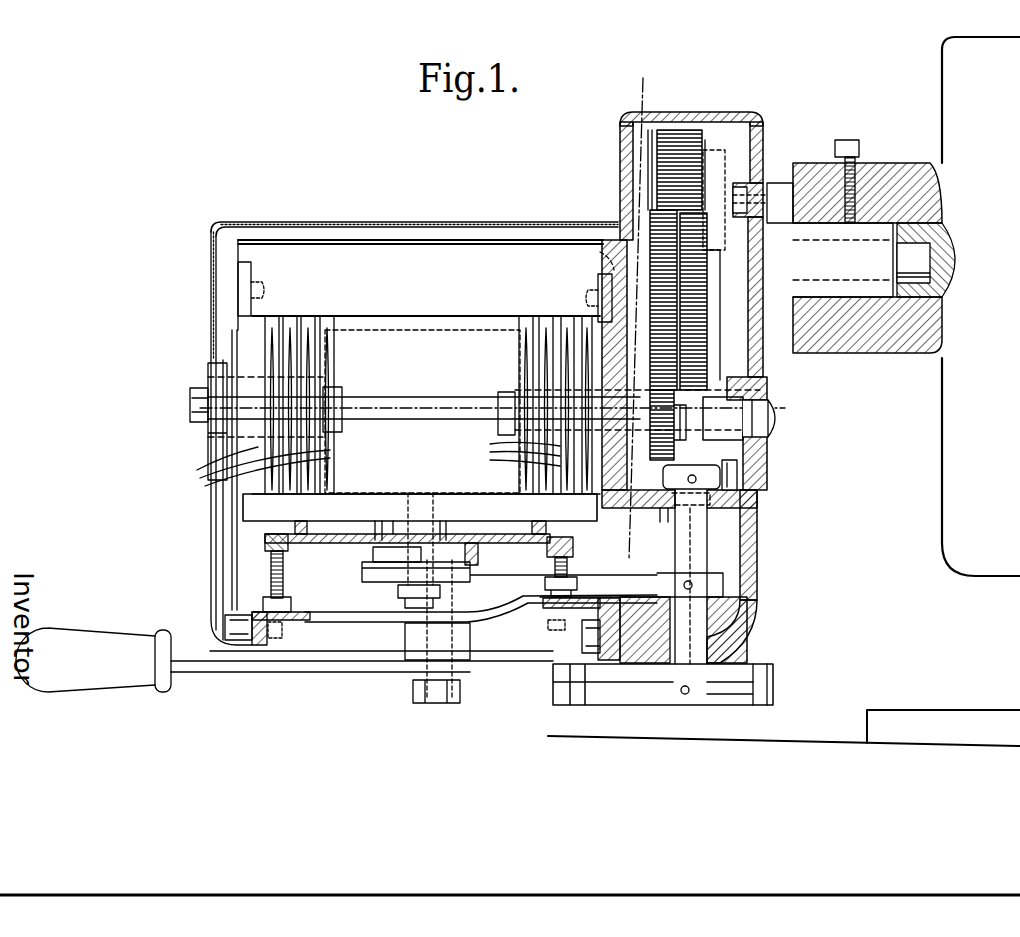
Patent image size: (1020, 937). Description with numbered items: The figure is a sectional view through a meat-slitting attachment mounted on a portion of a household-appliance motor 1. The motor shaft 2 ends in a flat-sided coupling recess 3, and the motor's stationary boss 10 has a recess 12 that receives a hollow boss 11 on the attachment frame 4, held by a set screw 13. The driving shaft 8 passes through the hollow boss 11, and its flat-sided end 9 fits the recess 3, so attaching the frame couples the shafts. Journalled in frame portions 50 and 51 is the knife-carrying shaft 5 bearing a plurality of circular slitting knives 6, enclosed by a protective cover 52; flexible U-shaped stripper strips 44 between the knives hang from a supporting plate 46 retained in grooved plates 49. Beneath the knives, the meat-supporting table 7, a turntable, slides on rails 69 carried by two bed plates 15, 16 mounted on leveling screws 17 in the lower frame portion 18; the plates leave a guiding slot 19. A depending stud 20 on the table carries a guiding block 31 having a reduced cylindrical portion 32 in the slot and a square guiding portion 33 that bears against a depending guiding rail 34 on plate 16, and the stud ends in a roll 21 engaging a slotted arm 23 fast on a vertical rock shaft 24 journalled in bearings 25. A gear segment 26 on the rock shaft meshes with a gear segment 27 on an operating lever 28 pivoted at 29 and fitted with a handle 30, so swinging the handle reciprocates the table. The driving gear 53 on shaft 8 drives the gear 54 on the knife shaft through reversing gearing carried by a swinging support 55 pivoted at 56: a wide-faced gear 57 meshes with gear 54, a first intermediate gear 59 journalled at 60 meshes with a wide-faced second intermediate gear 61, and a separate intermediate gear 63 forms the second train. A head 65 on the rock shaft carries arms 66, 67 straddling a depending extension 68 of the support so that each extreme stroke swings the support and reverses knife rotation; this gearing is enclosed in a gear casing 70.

The motor 1 is at (968, 82).
The motor shaft 2 is at (926, 300).
The coupling recess 3 is at (875, 372).
The frame 4 is at (758, 522).
The knife-carrying shaft 5 is at (425, 408).
The circular slitting knives 6 is at (540, 366).
The meat-supporting table 7 is at (258, 508).
The driving shaft 8 is at (787, 250).
The flat-sided end 9 is at (915, 242).
The stationary hub element or boss 10 is at (845, 352).
The hollow boss 11 is at (882, 232).
The recess 12 is at (825, 180).
The set screw 13 is at (850, 140).
The plate 15 is at (340, 542).
The plate 16 is at (515, 544).
The leveling screws 17 is at (271, 568).
The lower portion of the frame 18 is at (302, 622).
The guiding slot 19 is at (394, 522).
The depending stud 20 is at (424, 520).
The roll 21 is at (442, 587).
The arm 23 is at (517, 580).
The vertical rock shaft 24 is at (703, 553).
The bearings 25 is at (752, 492).
The gear segment 26 is at (776, 688).
The gear segment 27 is at (553, 690).
The operating lever 28 is at (334, 673).
The pivot 29 is at (418, 660).
The handle 30 is at (82, 640).
The guiding block 31 is at (388, 528).
The cylindrical portion 32 is at (446, 528).
The flat-sided guiding portion 33 is at (372, 560).
The depending guiding rail 34 is at (478, 552).
The flexible U-shaped strips 44 is at (198, 470).
The supporting plate 46 is at (400, 256).
The plates 49 is at (253, 272).
The frame portion 50 is at (216, 336).
The frame portion 51 is at (609, 372).
The protective cover 52 is at (478, 234).
The gear 53 is at (725, 178).
The gear 54 is at (652, 458).
The swinging support 55 is at (790, 270).
The pivot 56 is at (780, 420).
The wide-faced gear 57 is at (708, 368).
The first intermediate gear 59 is at (660, 252).
The journal 60 is at (600, 252).
The second intermediate gear 61 is at (700, 145).
The intermediate gear 63 is at (702, 382).
The head 65 is at (660, 504).
The arm 66 is at (752, 474).
The arm 67 is at (690, 470).
The depending extension 68 is at (752, 458).
The rails 69 is at (295, 528).
The gear casing 70 is at (672, 122).